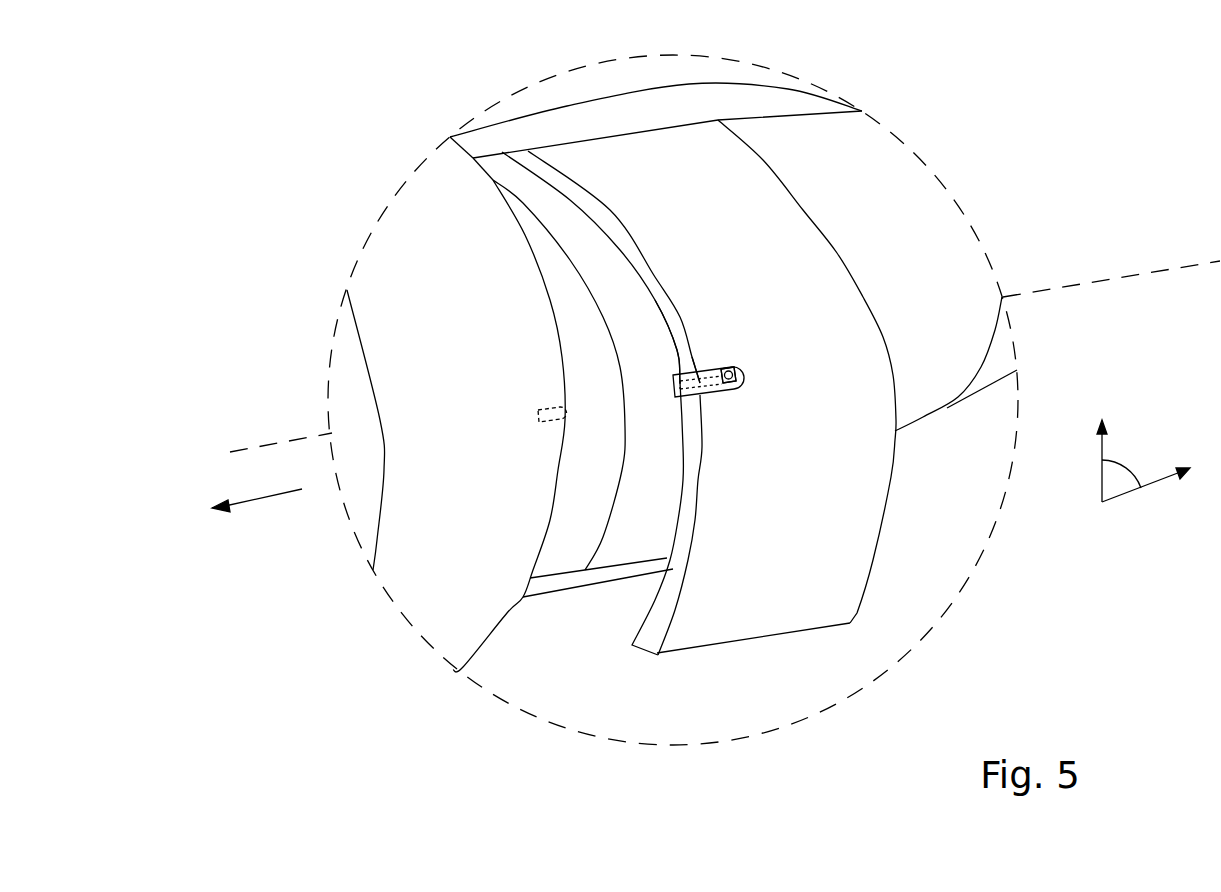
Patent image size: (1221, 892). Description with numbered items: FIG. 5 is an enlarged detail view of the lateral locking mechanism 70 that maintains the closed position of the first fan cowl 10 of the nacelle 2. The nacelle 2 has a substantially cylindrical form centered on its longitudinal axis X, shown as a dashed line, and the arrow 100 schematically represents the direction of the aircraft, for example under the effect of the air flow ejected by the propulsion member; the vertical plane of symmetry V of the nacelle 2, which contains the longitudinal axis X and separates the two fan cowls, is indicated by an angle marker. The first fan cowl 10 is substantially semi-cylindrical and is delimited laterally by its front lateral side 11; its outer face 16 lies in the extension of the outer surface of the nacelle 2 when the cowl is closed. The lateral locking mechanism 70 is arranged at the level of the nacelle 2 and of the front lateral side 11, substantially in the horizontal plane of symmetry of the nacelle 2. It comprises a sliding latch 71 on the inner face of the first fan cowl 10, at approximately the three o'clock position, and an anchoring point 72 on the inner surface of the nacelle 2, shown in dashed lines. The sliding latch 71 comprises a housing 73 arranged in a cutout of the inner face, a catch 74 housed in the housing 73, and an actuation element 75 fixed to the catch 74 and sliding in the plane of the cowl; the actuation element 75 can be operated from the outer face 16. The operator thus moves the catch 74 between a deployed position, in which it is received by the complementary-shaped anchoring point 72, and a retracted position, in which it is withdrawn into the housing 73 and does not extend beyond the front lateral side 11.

The nacelle 2 is at (407, 540).
The first fan cowl 10 is at (802, 469).
The front lateral side 11 is at (653, 633).
The outer face 16 is at (858, 477).
The lateral locking mechanism 70 is at (720, 368).
The sliding latch 71 is at (735, 392).
The anchoring point 72 is at (540, 407).
The housing 73 is at (678, 373).
The catch 74 is at (700, 372).
The actuation element 75 is at (733, 368).
The arrow 100 is at (257, 500).
The longitudinal axis X is at (1128, 277).
The vertical plane of symmetry V is at (1123, 467).